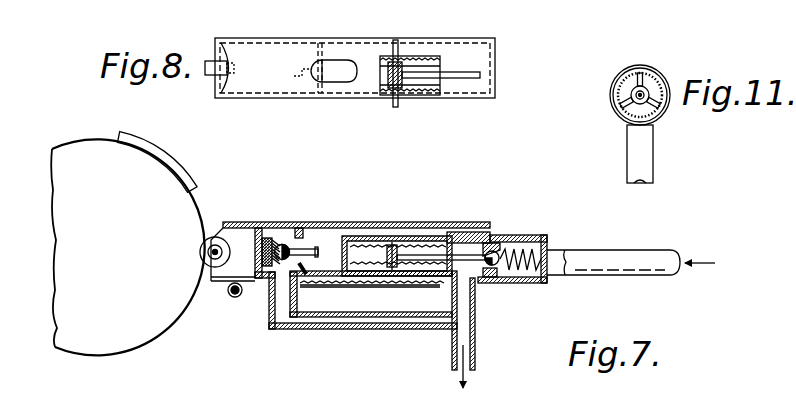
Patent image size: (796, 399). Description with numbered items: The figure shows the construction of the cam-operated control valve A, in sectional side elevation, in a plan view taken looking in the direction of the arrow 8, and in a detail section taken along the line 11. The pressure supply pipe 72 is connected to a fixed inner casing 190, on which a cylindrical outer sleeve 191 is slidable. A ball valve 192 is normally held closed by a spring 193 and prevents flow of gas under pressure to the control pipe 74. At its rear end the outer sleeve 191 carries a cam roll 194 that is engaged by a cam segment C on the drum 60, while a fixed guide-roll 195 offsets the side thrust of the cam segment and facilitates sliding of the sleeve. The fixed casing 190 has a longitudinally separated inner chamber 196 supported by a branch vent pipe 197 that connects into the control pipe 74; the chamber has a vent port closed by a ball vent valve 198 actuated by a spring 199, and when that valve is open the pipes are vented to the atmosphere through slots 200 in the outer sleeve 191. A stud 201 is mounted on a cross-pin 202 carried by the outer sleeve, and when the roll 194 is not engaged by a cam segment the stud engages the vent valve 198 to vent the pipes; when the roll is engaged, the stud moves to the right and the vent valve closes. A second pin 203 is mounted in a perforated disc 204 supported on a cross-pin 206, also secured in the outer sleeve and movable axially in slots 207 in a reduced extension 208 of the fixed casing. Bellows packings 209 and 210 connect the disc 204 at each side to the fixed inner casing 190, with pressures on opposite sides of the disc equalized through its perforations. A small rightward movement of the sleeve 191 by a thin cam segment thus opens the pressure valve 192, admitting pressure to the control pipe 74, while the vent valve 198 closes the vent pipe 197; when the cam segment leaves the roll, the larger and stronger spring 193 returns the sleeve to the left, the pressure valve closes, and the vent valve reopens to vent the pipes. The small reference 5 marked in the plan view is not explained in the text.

In FIG. 7, the cam disc 60 is at (63, 203).
In FIG. 7, the plunger rod 72 is at (613, 257).
In FIG. 11, the outlet pipe 74 is at (645, 158).
In FIG. 7, the outlet pipe 74 is at (452, 352).
In FIG. 11, the spring 190 is at (627, 75).
In FIG. 7, the spring 190 is at (543, 285).
In FIG. 8, the cylinder 191 is at (253, 38).
In FIG. 11, the cylinder 191 is at (621, 118).
In FIG. 7, the cylinder 191 is at (397, 239).
In FIG. 11, the valve ball 192 is at (627, 91).
In FIG. 7, the valve ball 192 is at (485, 260).
In FIG. 7, the valve housing 193 is at (543, 233).
In FIG. 8, the roller bearing 194 is at (213, 75).
In FIG. 7, the roller bearing 194 is at (200, 250).
In FIG. 7, the pivot pin 195 is at (232, 291).
In FIG. 7, the bearing block 196 is at (350, 251).
In FIG. 7, the passage 197 is at (290, 330).
In FIG. 7, the ball 198 is at (282, 245).
In FIG. 7, the packing 199 is at (269, 240).
In FIG. 8, the piston 200 is at (338, 61).
In FIG. 7, the piston 200 is at (339, 236).
In FIG. 8, the piston rod 201 is at (285, 76).
In FIG. 7, the piston rod 201 is at (317, 244).
In FIG. 8, the stop 202 is at (310, 91).
In FIG. 7, the stop 202 is at (322, 269).
In FIG. 8, the adjusting rod 203 is at (450, 66).
In FIG. 7, the adjusting rod 203 is at (470, 224).
In FIG. 7, the threaded sleeve 204 is at (393, 282).
In FIG. 8, the adjusting nut 206 is at (394, 41).
In FIG. 7, the adjusting nut 206 is at (375, 256).
In FIG. 8, the collar 207 is at (406, 97).
In FIG. 8, the threaded block 208 is at (434, 55).
In FIG. 8, the guide 209 is at (382, 97).
In FIG. 7, the guide 209 is at (358, 282).
In FIG. 8, the thread 210 is at (440, 77).
In FIG. 7, the thread 210 is at (415, 272).
In FIG. 8, the clearance 5 is at (386, 73).
In FIG. 7, the section line 8 is at (390, 196).
In FIG. 7, the section line 11 is at (489, 218).
In FIG. 7, the pump unit A' A is at (224, 224).
In FIG. 7, the cam C' C is at (158, 156).